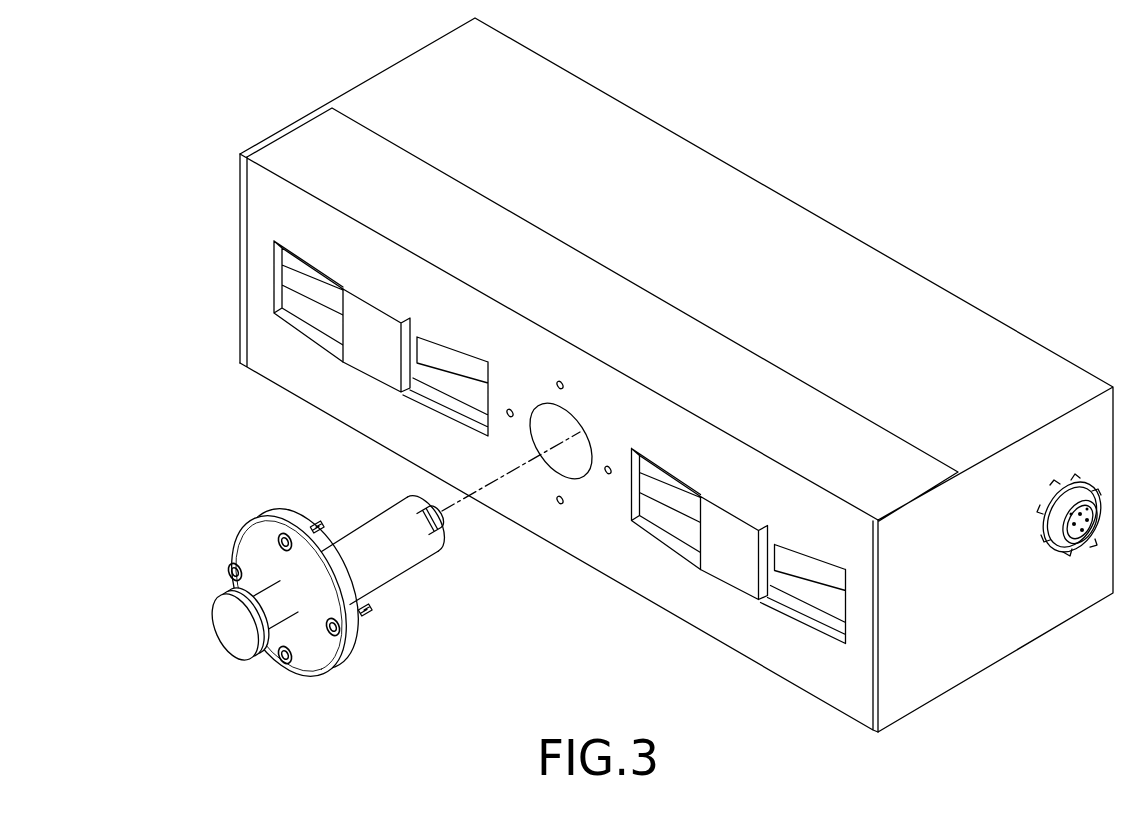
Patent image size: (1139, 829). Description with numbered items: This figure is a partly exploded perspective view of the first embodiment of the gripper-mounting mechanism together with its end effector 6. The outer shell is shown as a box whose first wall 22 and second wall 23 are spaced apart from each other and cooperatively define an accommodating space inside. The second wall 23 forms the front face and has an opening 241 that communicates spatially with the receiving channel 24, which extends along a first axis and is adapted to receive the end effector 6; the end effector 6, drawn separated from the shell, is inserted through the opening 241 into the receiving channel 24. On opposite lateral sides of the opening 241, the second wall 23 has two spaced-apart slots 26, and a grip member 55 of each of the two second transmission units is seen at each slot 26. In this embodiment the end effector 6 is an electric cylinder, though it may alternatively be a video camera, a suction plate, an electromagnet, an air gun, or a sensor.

The first wall 22 is at (892, 257).
The second wall 23 is at (583, 538).
The receiving channel 24 is at (572, 465).
The opening 241 is at (546, 460).
The slots 26 is at (452, 393).
The grip member 55 is at (727, 566).
The end effector 6 is at (338, 675).